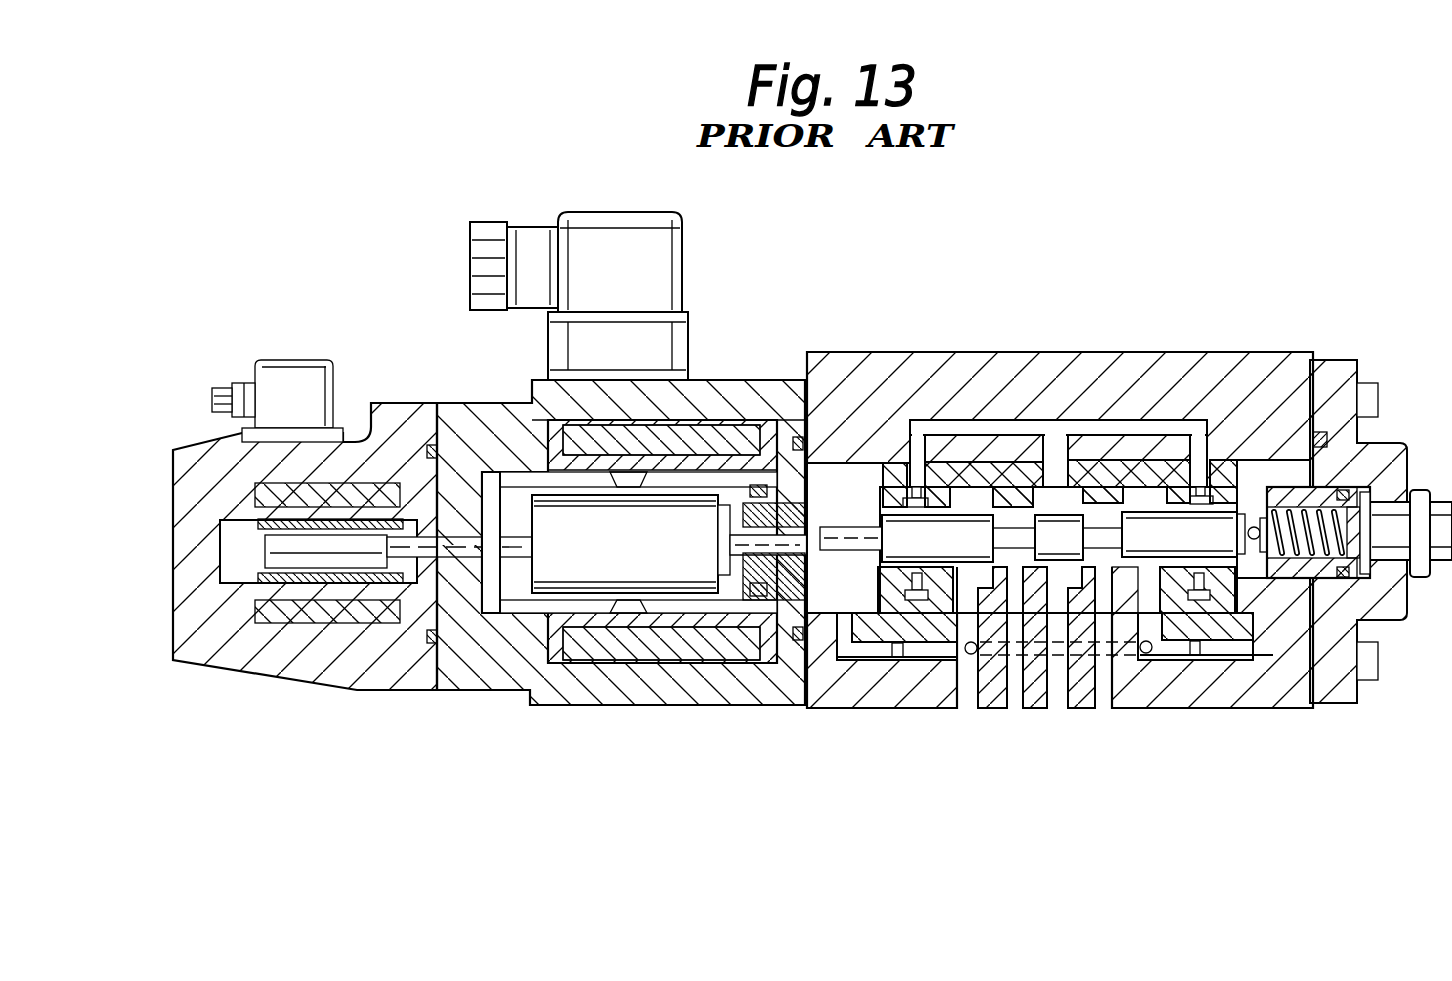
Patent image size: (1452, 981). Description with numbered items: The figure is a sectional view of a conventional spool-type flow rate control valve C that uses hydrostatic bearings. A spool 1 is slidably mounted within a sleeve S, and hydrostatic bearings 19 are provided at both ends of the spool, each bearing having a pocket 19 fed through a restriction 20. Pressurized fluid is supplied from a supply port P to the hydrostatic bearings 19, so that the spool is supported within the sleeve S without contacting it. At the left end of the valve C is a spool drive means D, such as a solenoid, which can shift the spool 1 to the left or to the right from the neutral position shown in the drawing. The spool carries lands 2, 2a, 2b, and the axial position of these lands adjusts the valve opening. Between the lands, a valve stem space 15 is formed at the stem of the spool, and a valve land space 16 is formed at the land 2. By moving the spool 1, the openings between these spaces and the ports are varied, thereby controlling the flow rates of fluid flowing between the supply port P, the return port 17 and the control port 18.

The spool 1 is at (888, 527).
The land 2 is at (1172, 530).
The land 2a is at (1052, 530).
The land 2b is at (940, 523).
The valve stem space 15 is at (1007, 512).
The valve land space 16 is at (970, 573).
The return port 17 is at (970, 693).
The control port 18 is at (1013, 700).
The hydrostatic bearing 19 is at (853, 617).
The restriction of the hydrostatic bearing 20 is at (1190, 418).
The flow control valve C is at (998, 348).
The spool drive means D is at (514, 725).
The supply port P is at (1060, 693).
The sleeve S is at (1120, 497).